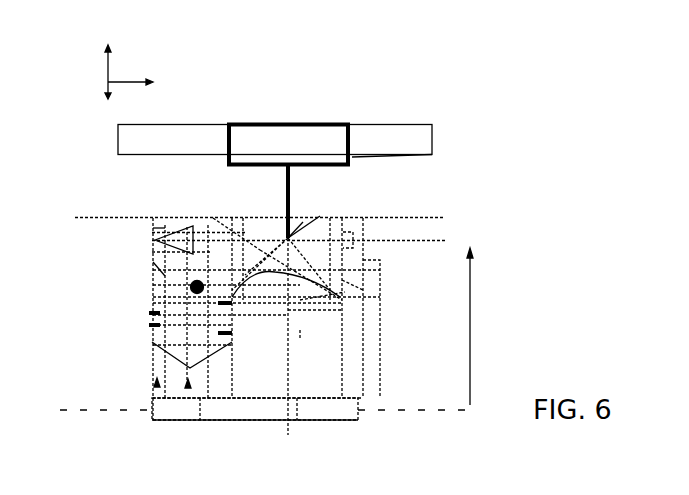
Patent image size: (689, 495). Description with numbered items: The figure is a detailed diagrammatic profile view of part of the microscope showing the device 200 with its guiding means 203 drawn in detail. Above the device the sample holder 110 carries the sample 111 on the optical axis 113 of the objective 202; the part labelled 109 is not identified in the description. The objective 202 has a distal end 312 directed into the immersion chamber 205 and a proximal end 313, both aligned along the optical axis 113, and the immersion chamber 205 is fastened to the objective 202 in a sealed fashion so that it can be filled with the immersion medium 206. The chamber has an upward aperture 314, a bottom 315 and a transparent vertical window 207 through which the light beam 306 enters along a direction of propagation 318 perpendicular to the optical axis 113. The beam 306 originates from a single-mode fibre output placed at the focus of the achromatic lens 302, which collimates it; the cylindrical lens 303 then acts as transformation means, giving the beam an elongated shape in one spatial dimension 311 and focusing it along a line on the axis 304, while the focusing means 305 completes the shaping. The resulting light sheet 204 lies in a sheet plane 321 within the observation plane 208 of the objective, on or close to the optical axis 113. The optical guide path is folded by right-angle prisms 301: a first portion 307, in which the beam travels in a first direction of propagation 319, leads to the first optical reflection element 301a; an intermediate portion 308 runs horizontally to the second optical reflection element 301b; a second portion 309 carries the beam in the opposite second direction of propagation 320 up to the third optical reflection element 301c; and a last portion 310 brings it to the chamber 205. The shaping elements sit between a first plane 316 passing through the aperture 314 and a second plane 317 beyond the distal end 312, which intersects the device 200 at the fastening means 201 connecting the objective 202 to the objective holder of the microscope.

The spatial dimension 311 is at (100, 84).
The mounting plate 109 is at (206, 118).
The sample holder 110 is at (355, 157).
The window 207 is at (233, 216).
The sample 111 is at (278, 216).
The aperture 314 is at (303, 205).
The observation plane 208 is at (324, 211).
The immersion chamber 205 is at (350, 218).
The last portion 310 is at (210, 215).
The direction of propagation 318 is at (260, 220).
The first plane 316 is at (78, 215).
The focusing means 305 is at (206, 222).
The immersion medium 206 is at (449, 228).
The sheet plane 321 is at (266, 265).
The right-angle prisms 301 is at (258, 308).
The third optical reflection element 301c is at (150, 240).
The axis 304 is at (150, 268).
The second direction of propagation 320 is at (152, 305).
The second portion 309 is at (148, 313).
The cylindrical lens 303 is at (148, 325).
The achromatic lens 302 is at (140, 337).
The second optical reflection element 301b is at (147, 362).
The second plane 317 is at (83, 413).
The guiding means 203 is at (150, 397).
The intermediate portion 308 is at (186, 407).
The objective 202 is at (233, 400).
The optical axis 113 is at (270, 440).
The proximal end 313 is at (297, 408).
The fastening means 201 is at (345, 426).
The first optical reflection element 301a is at (302, 353).
The first portion 307 is at (307, 341).
The first direction of propagation 319 is at (222, 303).
The light beam 306 is at (222, 334).
The distal end 312 is at (340, 297).
The bottom 315 is at (342, 297).
The light sheet 204 is at (366, 268).
The device 200 is at (518, 289).